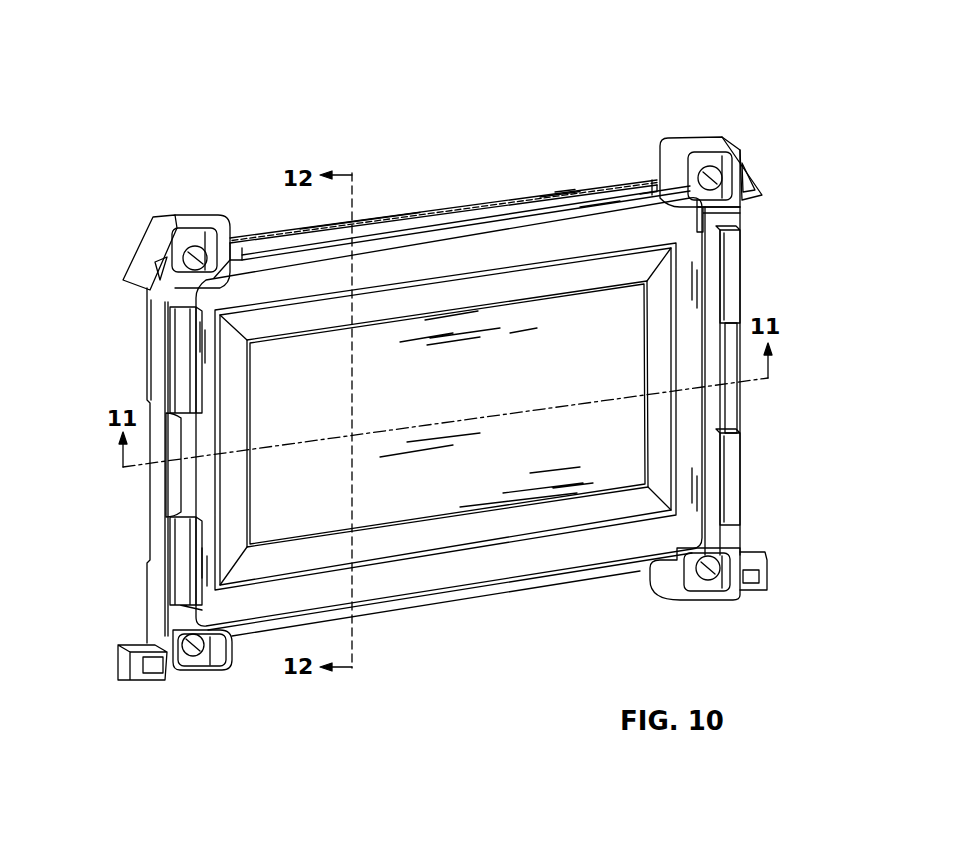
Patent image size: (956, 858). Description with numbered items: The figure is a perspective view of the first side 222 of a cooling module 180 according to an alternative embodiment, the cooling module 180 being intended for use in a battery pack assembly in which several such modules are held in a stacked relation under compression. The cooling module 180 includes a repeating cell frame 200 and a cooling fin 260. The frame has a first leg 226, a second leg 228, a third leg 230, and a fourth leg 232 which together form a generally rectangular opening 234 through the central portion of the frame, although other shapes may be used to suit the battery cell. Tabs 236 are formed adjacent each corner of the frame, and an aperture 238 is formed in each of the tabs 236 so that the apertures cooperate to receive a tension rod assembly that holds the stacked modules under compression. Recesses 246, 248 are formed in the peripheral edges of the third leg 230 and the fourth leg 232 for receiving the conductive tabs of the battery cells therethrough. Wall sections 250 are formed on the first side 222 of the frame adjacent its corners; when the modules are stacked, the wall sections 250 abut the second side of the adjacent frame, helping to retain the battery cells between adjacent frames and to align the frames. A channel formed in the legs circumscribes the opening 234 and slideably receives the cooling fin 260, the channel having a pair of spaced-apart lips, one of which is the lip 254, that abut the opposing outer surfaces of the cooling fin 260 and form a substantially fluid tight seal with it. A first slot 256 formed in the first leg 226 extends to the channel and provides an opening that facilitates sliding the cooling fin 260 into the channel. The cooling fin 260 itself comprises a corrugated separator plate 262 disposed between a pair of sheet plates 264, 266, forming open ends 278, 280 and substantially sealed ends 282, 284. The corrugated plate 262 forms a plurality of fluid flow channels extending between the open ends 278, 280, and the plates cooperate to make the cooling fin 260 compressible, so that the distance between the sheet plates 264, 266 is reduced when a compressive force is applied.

The cooling module 180 is at (592, 72).
The repeating cell frame 200 is at (742, 162).
The first side 222 is at (292, 262).
The first leg 226 is at (425, 240).
The second leg 228 is at (445, 600).
The third leg 230 is at (148, 318).
The fourth leg 232 is at (742, 215).
The opening 234 is at (490, 510).
The tab 236 is at (171, 219).
The aperture 238 is at (193, 246).
The recess 246 is at (166, 508).
The recess 248 is at (150, 480).
The wall section 250 is at (176, 360).
The lip 254 is at (233, 400).
The first slot 256 is at (657, 180).
The cooling fin 260 is at (503, 195).
The corrugated separator plate 262 is at (556, 192).
The sheet plate 264 is at (590, 202).
The sheet plate 266 is at (563, 190).
The open end 278 is at (460, 222).
The open end 280 is at (390, 605).
The sealed end 282 is at (232, 243).
The sealed end 284 is at (645, 193).